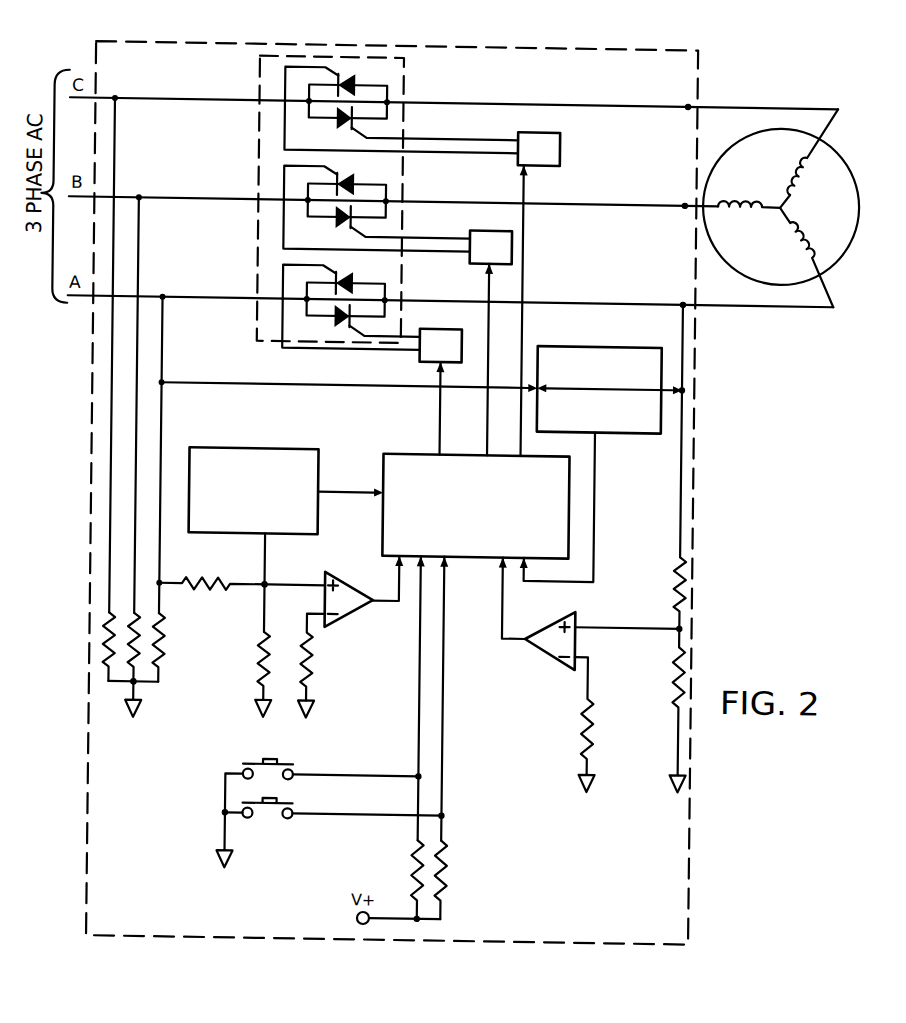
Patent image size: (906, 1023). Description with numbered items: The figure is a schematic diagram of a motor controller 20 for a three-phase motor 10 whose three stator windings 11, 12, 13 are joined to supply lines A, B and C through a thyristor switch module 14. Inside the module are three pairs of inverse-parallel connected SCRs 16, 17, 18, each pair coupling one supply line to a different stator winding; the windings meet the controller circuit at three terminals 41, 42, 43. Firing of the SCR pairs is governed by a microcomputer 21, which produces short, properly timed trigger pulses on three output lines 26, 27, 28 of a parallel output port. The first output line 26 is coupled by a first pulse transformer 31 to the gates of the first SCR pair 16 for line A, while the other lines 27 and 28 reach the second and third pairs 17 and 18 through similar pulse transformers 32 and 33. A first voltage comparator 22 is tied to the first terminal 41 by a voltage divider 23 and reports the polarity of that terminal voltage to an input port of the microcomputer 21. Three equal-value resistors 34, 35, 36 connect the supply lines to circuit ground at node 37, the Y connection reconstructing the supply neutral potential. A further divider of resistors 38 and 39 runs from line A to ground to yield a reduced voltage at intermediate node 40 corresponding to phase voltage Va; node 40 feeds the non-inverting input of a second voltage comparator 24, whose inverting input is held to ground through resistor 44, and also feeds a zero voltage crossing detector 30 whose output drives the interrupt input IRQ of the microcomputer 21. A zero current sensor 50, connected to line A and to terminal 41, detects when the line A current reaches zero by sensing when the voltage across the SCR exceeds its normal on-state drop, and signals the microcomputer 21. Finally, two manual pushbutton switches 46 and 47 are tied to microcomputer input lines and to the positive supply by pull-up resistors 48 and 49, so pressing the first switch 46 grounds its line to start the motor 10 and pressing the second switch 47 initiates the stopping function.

The three-phase motor 10 is at (749, 256).
The stator winding 11 is at (797, 234).
The stator winding 12 is at (749, 194).
The stator winding 13 is at (801, 158).
The thyristor switch module 14 is at (392, 72).
The first pair of SCRs 16 is at (317, 293).
The second pair of SCRs 17 is at (317, 194).
The third pair of SCRs 18 is at (317, 95).
The motor controller 20 is at (695, 406).
The microcomputer 21 is at (404, 454).
The first voltage comparator 22 is at (547, 653).
The voltage divider 23 is at (667, 608).
The second voltage comparator 24 is at (348, 575).
The first output line 26 is at (437, 410).
The trigger output line 27 is at (485, 400).
The trigger output line 28 is at (519, 430).
The zero voltage crossing detector 30 is at (264, 450).
The first pulse transformer 31 is at (448, 329).
The pulse transformer 32 is at (487, 230).
The pulse transformer 33 is at (526, 132).
The resistor 34 is at (167, 659).
The resistor 35 is at (131, 632).
The resistor 36 is at (109, 645).
The node 37 is at (137, 687).
The resistor 38 is at (226, 578).
The resistor 39 is at (264, 652).
The intermediate node 40 is at (263, 590).
The first terminal 41 is at (681, 299).
The terminal 42 is at (682, 200).
The terminal 43 is at (684, 101).
The resistor 44 is at (322, 656).
The first switch 46 is at (270, 782).
The second switch 47 is at (276, 820).
The pull-up resistor 48 is at (414, 872).
The pull-up resistor 49 is at (451, 867).
The zero current sensor 50 is at (608, 342).